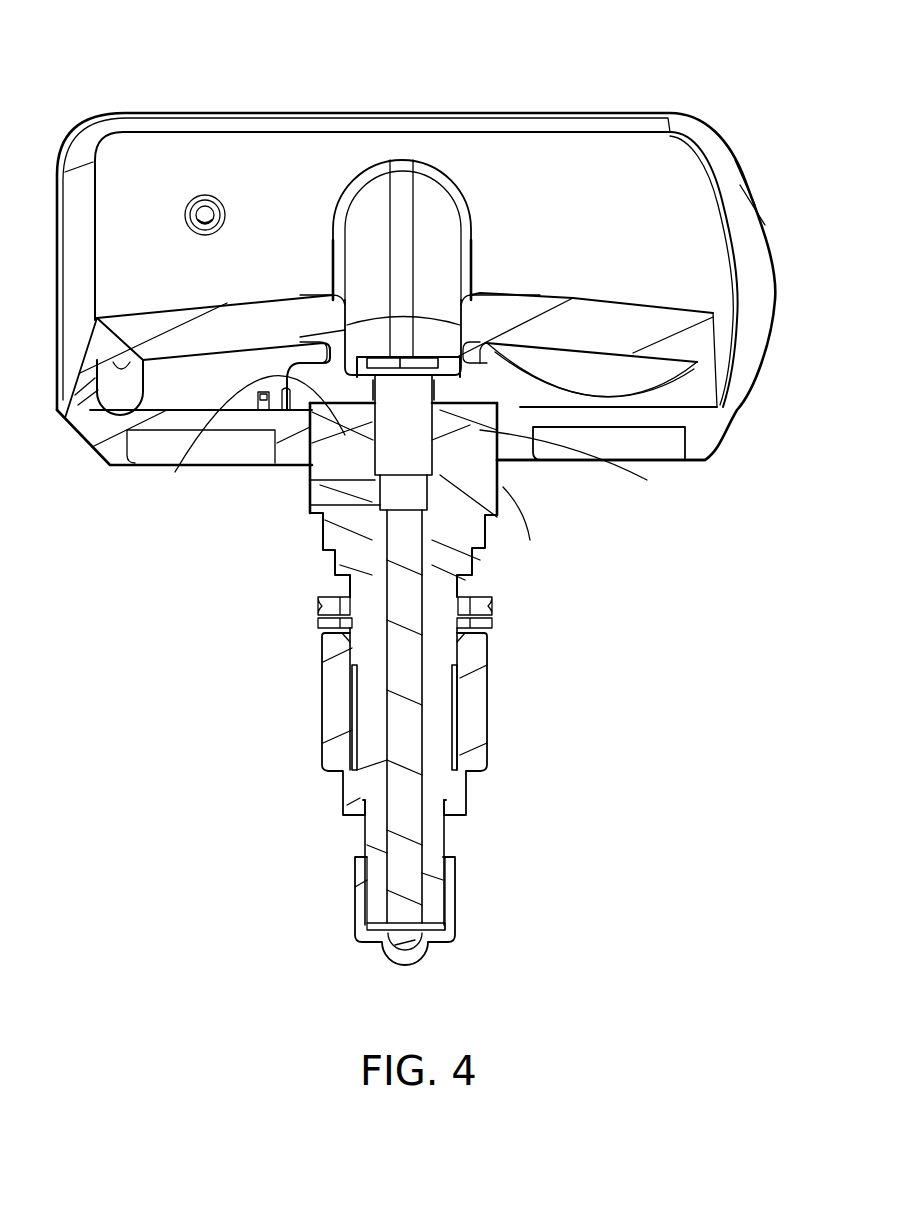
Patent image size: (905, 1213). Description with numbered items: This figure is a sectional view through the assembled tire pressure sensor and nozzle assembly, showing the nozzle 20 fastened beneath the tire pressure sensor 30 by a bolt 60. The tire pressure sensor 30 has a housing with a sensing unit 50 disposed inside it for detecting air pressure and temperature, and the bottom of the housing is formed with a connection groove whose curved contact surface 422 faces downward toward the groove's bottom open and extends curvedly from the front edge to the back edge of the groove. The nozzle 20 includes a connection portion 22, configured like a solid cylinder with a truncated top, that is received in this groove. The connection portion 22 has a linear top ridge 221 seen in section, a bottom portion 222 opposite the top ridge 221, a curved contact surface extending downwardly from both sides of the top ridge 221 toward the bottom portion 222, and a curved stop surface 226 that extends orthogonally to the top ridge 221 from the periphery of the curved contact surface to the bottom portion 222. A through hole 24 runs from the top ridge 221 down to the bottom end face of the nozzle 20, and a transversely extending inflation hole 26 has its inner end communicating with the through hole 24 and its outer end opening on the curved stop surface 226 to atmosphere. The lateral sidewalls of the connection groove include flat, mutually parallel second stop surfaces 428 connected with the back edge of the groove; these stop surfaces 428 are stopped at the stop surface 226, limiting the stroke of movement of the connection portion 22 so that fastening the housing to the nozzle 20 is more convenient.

The nozzle 20 is at (512, 718).
The connection portion 22 is at (497, 517).
The through hole 24 is at (397, 643).
The inflation hole 26 is at (337, 488).
The tire pressure sensor 30 is at (478, 105).
The sensing unit 50 is at (696, 402).
The bolt 60 is at (428, 348).
The top ridge 221 is at (355, 405).
The bottom portion 222 is at (317, 518).
The curved stop surface 226 is at (497, 485).
The curved contact surface 422 is at (285, 385).
The second stop surface 428 is at (590, 452).